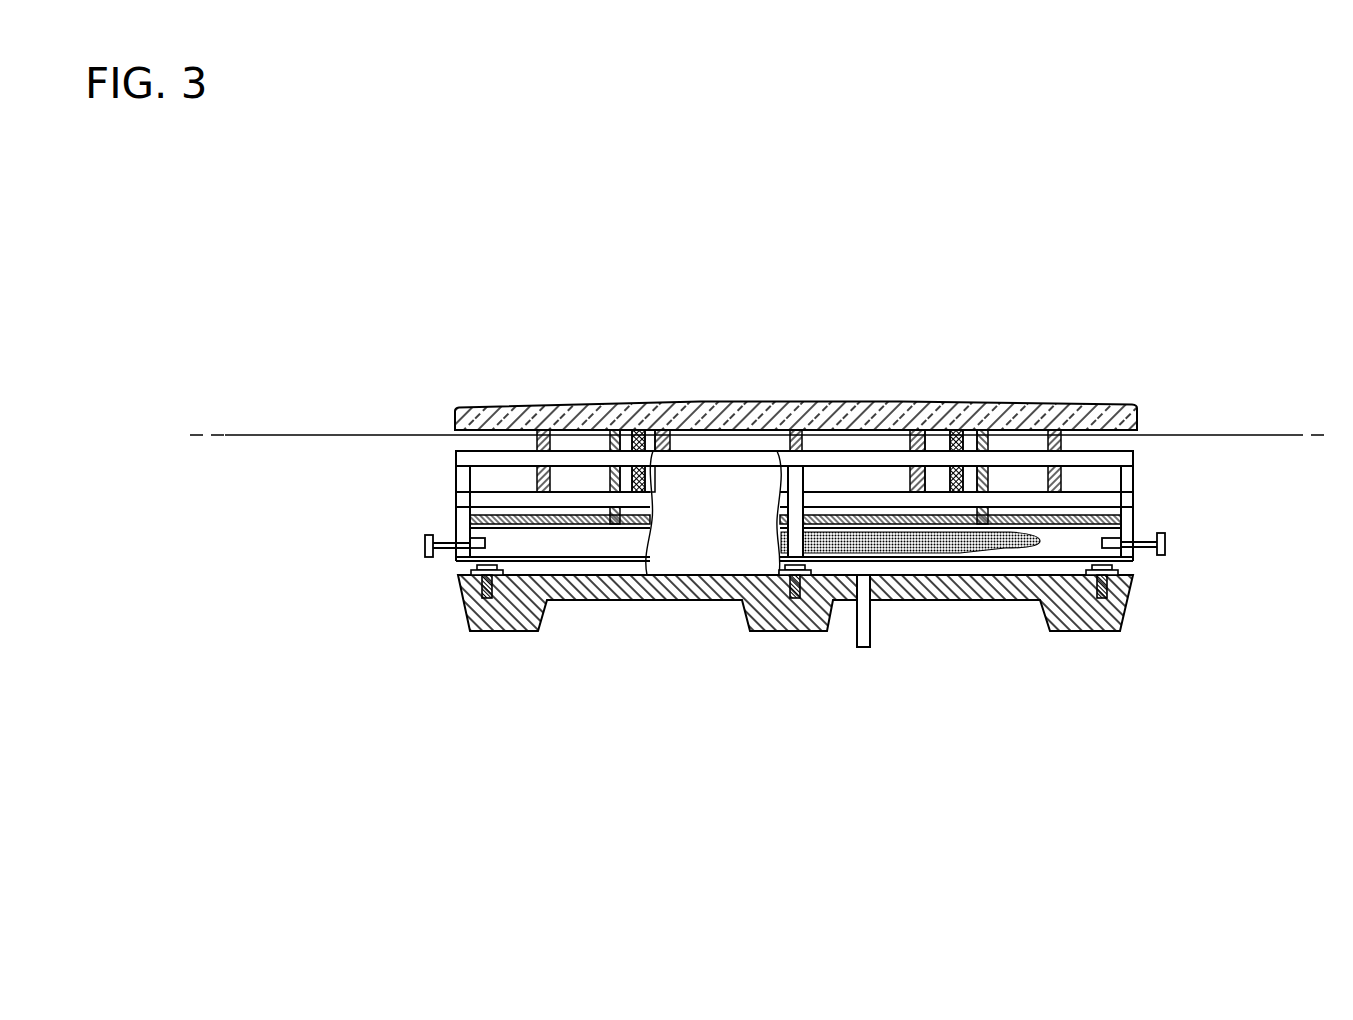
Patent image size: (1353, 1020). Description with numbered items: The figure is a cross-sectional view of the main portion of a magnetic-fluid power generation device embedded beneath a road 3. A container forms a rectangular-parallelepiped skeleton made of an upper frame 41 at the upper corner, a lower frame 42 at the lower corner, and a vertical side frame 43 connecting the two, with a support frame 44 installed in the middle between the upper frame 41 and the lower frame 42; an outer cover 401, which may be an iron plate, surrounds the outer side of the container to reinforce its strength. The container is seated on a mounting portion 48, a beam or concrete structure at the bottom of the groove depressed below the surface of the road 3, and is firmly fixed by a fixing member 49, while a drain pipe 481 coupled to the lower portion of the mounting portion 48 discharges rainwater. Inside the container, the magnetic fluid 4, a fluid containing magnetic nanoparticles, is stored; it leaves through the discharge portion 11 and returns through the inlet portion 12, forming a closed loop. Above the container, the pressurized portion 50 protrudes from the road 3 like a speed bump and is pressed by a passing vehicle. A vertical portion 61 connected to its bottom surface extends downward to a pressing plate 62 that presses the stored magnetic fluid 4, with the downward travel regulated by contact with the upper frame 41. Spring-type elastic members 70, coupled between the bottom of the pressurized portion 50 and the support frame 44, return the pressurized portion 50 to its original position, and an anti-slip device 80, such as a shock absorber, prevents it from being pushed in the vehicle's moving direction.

The road 3 is at (1207, 435).
The magnetic fluid 4 is at (960, 553).
The discharge portion 11 is at (423, 545).
The inlet portion 12 is at (1147, 548).
The upper frame 41 is at (455, 456).
The lower frame 42 is at (453, 566).
The side frame 43 is at (462, 520).
The support frame 44 is at (462, 499).
The mounting portion 48 is at (486, 622).
The fixing member 49 is at (490, 582).
The pressurized portion 50 is at (816, 402).
The vertical portion 61 is at (612, 475).
The pressing plate 62 is at (1009, 528).
The elastic member 70 is at (544, 432).
The anti-slip device 80 is at (640, 430).
The outer cover 401 is at (702, 562).
The drain pipe 481 is at (870, 632).